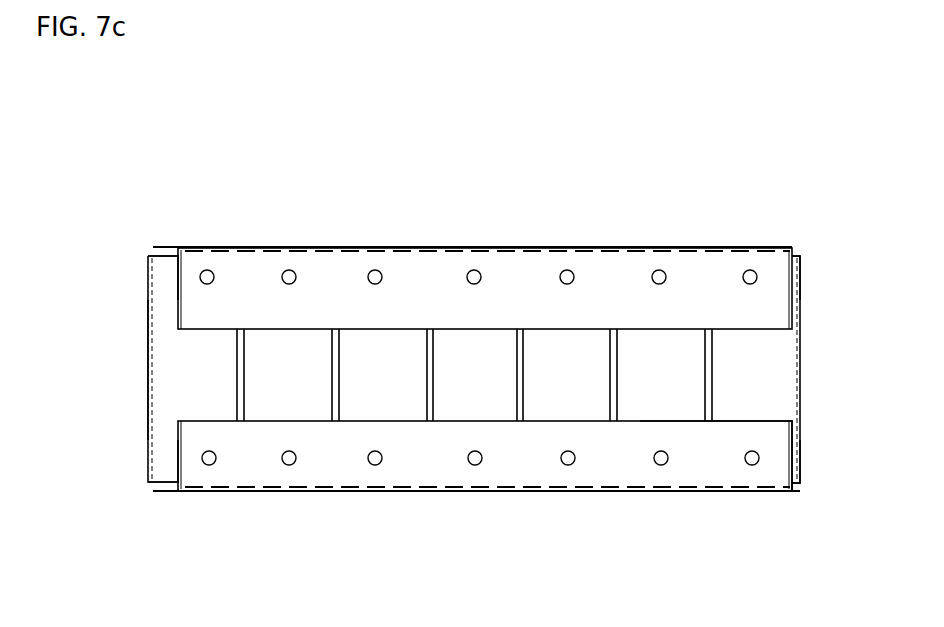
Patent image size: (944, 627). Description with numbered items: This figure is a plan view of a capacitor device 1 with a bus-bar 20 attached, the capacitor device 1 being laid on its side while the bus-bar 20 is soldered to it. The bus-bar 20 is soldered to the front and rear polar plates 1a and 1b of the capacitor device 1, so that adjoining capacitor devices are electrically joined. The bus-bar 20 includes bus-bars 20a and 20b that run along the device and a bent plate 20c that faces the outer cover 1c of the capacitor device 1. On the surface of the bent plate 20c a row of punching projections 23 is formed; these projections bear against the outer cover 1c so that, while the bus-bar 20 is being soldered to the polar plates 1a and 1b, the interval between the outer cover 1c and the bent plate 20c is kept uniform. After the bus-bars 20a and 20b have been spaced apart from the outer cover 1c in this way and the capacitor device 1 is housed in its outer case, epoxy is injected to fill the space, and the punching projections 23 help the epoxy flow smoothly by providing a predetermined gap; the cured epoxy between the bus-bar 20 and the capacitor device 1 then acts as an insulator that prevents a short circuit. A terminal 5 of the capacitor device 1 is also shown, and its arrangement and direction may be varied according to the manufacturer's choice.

The capacitor device 1 is at (386, 373).
The polar plate 1a is at (800, 258).
The polar plate 1b is at (793, 492).
The outer cover 1c is at (190, 367).
The terminal 5 is at (175, 285).
The bus-bar 20 is at (718, 245).
The bus-bar 20a is at (424, 247).
The bus-bar 20b is at (718, 470).
The bent plate 20c is at (518, 470).
The punching projection 23 is at (207, 272).